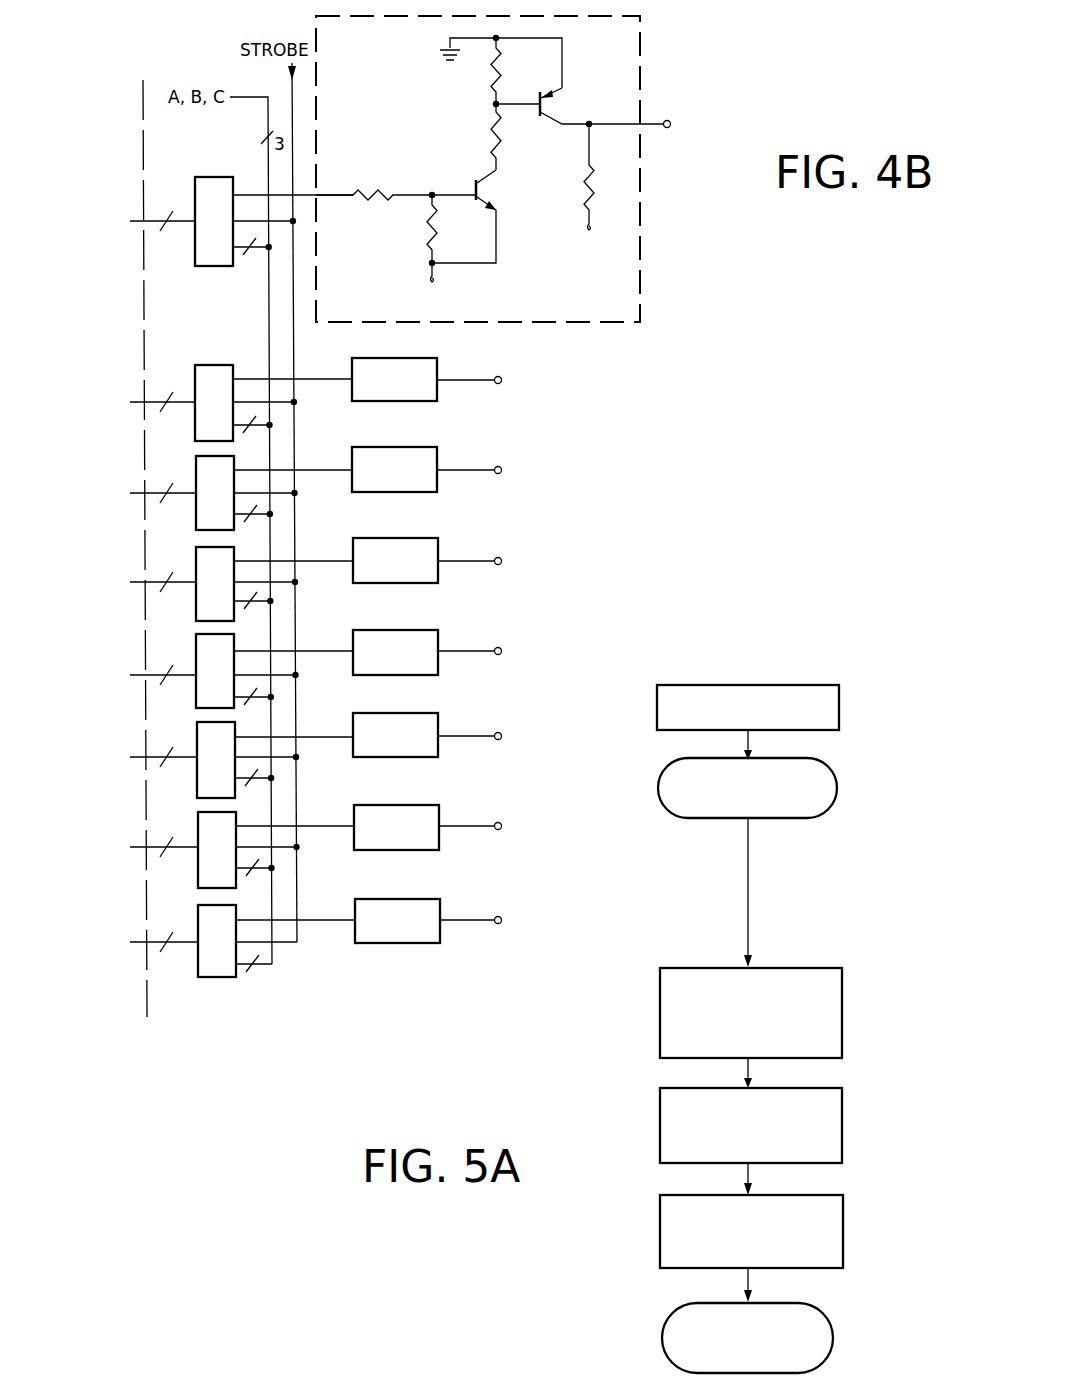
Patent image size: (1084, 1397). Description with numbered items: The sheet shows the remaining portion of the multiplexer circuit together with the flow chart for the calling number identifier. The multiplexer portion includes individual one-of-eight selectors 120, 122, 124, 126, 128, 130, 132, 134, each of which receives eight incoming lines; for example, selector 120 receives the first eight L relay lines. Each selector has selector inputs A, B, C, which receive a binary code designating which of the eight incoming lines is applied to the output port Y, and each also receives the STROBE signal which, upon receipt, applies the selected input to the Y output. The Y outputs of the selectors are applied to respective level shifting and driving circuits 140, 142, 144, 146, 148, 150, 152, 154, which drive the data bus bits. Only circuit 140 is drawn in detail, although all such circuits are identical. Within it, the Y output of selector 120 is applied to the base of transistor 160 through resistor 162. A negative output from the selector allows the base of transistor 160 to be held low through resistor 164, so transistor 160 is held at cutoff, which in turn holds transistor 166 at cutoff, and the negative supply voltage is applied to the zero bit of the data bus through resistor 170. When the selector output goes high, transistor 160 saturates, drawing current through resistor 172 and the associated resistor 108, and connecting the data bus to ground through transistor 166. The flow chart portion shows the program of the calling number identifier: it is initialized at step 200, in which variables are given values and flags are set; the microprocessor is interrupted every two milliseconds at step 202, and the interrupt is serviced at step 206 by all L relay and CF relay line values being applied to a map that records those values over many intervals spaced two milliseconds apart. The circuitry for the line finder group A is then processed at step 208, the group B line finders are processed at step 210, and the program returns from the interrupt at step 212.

In FIG. 4B, the resistor 108 is at (500, 66).
In FIG. 4B, the one-of-eight selector 120 is at (215, 266).
In FIG. 4B, the one-of-eight selector 122 is at (208, 365).
In FIG. 4B, the one-of-eight selector 124 is at (196, 457).
In FIG. 4B, the one-of-eight selector 126 is at (196, 551).
In FIG. 4B, the one-of-eight selector 128 is at (196, 638).
In FIG. 4B, the one-of-eight selector 130 is at (197, 726).
In FIG. 4B, the one-of-eight selector 132 is at (198, 816).
In FIG. 4B, the one-of-eight selector 134 is at (198, 909).
In FIG. 4B, the level shifting and driving circuit 140 is at (640, 232).
In FIG. 4B, the level shifting and driving circuit 142 is at (437, 361).
In FIG. 4B, the level shifting and driving circuit 144 is at (437, 450).
In FIG. 4B, the level shifting and driving circuit 146 is at (438, 541).
In FIG. 4B, the level shifting and driving circuit 148 is at (438, 633).
In FIG. 4B, the level shifting and driving circuit 150 is at (438, 716).
In FIG. 4B, the level shifting and driving circuit 152 is at (439, 808).
In FIG. 4B, the level shifting and driving circuit 154 is at (440, 902).
In FIG. 4B, the transistor 160 is at (475, 181).
In FIG. 4B, the resistor 162 is at (378, 190).
In FIG. 4B, the resistor 164 is at (428, 234).
In FIG. 4B, the transistor 166 is at (548, 104).
In FIG. 4B, the resistor 170 is at (584, 194).
In FIG. 4B, the resistor 172 is at (490, 125).
In FIG. 5A, the initialization step 200 is at (840, 697).
In FIG. 5A, the two-millisecond interrupt 202 is at (836, 772).
In FIG. 5A, the interrupt service step 206 is at (842, 986).
In FIG. 5A, the line finder group A processing step 208 is at (842, 1106).
In FIG. 5A, the line finder group B processing step 210 is at (843, 1213).
In FIG. 5A, the return from interrupt step 212 is at (833, 1328).